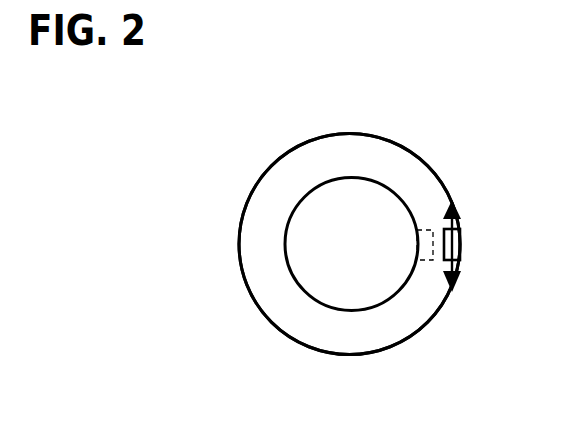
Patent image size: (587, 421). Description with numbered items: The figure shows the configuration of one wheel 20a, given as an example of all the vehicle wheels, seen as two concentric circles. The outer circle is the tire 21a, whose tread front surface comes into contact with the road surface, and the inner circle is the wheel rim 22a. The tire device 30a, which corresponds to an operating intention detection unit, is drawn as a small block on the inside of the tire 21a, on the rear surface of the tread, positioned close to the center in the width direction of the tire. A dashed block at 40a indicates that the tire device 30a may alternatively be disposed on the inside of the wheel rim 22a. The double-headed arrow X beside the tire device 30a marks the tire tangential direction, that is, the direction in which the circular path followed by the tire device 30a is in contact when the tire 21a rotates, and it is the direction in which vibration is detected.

The wheel 20a is at (408, 107).
The tire 21a is at (445, 177).
The wheel rim 22a is at (378, 308).
The tire device 30a is at (461, 244).
The arrow X is at (467, 218).
The alternative position of tire device 40a is at (421, 262).